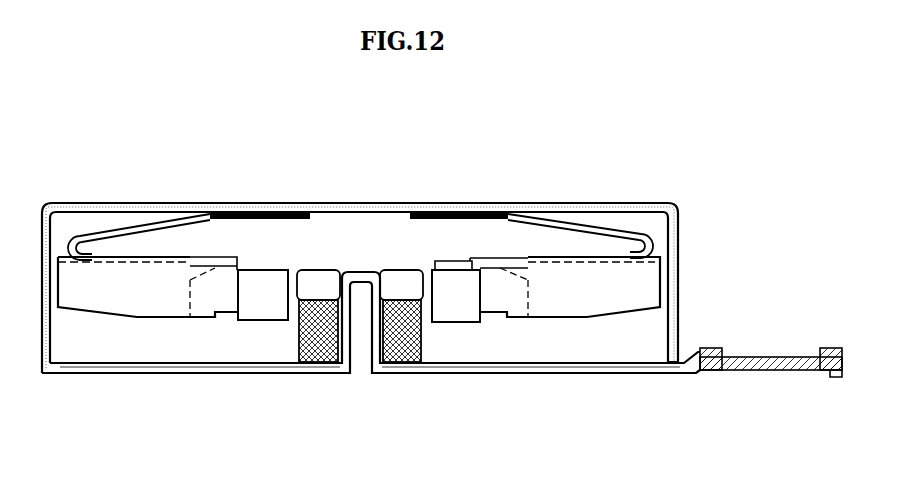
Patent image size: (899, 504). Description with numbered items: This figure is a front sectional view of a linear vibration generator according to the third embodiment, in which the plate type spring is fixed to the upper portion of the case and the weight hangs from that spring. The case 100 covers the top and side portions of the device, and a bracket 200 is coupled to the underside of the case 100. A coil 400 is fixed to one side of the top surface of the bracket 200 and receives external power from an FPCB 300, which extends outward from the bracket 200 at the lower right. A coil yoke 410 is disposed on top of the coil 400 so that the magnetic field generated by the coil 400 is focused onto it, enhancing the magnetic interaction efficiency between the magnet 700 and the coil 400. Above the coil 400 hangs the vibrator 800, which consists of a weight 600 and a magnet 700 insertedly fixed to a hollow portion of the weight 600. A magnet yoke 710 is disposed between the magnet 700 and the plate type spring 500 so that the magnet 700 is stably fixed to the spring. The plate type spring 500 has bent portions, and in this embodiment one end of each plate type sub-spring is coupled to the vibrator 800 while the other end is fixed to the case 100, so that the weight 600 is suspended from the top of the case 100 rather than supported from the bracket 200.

The case 100 is at (336, 203).
The bracket 200 is at (763, 369).
The FPCB 300 is at (592, 373).
The coil 400 is at (327, 343).
The coil yoke 410 is at (407, 280).
The plate type spring 500 is at (97, 233).
The weight 600 is at (582, 275).
The magnet 700 is at (267, 282).
The magnet yoke 710 is at (235, 320).
The vibrator 800 is at (687, 255).